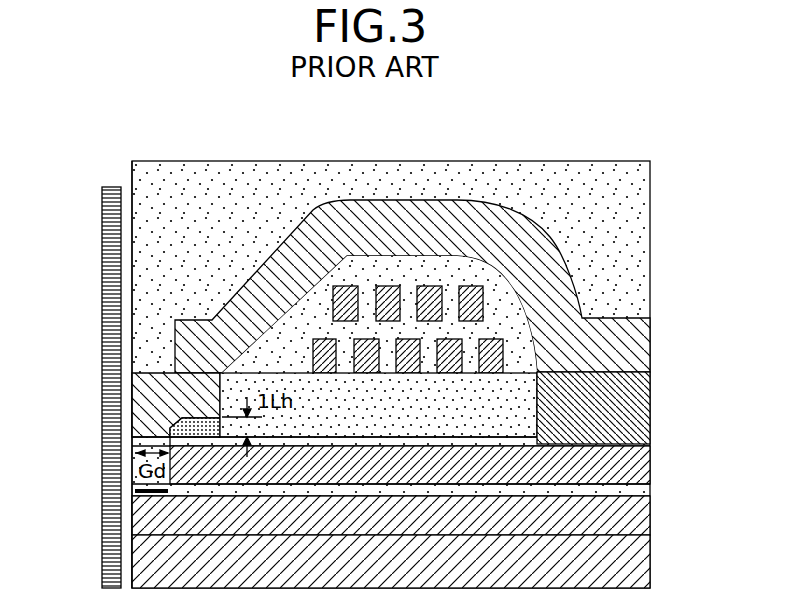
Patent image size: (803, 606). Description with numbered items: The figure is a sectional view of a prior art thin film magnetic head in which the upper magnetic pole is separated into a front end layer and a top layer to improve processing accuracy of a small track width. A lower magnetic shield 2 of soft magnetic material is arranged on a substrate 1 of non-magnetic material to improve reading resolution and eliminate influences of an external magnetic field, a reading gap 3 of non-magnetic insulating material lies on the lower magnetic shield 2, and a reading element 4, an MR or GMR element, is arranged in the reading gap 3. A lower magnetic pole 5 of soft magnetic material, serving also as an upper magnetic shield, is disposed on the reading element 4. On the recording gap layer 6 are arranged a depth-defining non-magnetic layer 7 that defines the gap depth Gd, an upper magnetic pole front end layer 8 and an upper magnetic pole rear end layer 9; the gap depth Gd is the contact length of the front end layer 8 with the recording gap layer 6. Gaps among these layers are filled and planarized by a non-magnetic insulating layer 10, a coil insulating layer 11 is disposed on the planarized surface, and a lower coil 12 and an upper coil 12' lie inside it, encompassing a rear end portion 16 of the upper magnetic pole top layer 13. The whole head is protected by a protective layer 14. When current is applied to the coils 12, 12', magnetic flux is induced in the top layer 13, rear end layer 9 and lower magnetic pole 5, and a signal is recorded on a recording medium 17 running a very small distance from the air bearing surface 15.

The substrate 1 is at (428, 561).
The lower magnetic shield 2 is at (428, 519).
The reading gap 3 is at (428, 490).
The reading element 4 is at (106, 502).
The lower magnetic pole 5 is at (447, 461).
The recording gap layer 6 is at (347, 418).
The depth-defining non-magnetic layer 7 is at (132, 390).
The upper magnetic pole front end layer 8 is at (132, 368).
The upper magnetic pole rear end layer 9 is at (630, 408).
The non-magnetic insulating layer 10 is at (475, 355).
The coil insulating layer 11 is at (521, 296).
The lower coil 12 is at (430, 247).
The upper coil 12' is at (447, 215).
The upper magnetic pole top layer 13 is at (412, 242).
The protective layer 14 is at (391, 361).
The air bearing surface 15 is at (85, 374).
The rear end portion 16 is at (656, 345).
The recording medium 17 is at (79, 387).